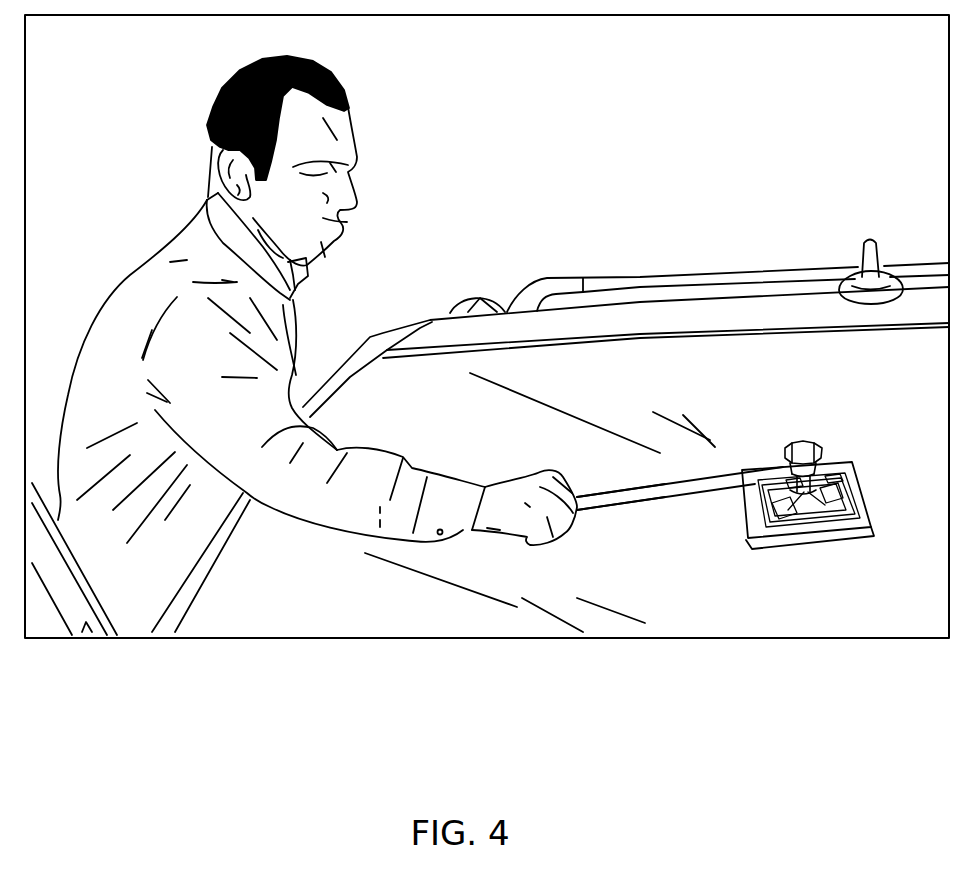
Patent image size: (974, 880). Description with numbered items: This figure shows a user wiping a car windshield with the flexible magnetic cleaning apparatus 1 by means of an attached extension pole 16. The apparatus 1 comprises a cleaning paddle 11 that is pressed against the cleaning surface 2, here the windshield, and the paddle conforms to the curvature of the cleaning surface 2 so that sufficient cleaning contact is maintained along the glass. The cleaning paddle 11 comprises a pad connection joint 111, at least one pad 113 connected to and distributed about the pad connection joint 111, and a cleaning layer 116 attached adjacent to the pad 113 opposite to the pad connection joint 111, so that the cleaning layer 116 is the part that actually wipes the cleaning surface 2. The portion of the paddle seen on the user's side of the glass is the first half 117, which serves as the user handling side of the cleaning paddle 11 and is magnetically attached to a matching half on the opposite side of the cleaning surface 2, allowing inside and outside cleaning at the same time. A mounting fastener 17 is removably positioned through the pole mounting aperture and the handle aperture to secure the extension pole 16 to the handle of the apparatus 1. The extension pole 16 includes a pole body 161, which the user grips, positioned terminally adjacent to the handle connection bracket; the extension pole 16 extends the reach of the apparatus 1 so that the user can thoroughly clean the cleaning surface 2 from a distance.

The flexible magnetic cleaning apparatus 1 is at (814, 469).
The cleaning paddle 11 is at (839, 473).
The pad connection joint 111 is at (838, 512).
The pad 113 is at (763, 511).
The cleaning layer 116 is at (868, 493).
The first half 117 is at (782, 553).
The extension pole 16 is at (667, 540).
The pole body 161 is at (643, 508).
The mounting fastener 17 is at (790, 440).
The cleaning surface 2 is at (462, 440).